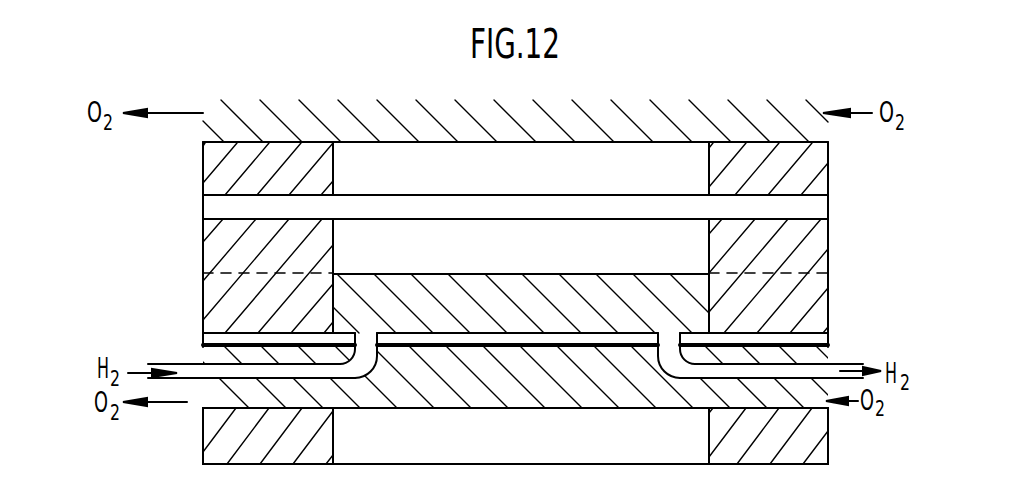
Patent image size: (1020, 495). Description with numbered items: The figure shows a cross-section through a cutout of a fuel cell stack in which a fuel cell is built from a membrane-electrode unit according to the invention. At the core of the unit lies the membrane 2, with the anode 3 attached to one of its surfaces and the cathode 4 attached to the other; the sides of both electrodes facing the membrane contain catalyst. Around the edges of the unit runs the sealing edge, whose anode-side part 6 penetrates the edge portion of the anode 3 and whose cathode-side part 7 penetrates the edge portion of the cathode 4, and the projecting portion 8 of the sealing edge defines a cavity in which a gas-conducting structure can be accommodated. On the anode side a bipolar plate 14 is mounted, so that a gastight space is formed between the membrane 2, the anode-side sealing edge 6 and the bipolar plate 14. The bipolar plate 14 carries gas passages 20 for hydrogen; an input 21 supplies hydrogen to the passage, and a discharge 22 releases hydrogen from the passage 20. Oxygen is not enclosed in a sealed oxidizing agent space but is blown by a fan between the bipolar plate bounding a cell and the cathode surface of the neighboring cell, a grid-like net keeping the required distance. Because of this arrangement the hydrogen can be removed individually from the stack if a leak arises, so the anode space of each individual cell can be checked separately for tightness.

The membrane 2 is at (515, 208).
The anode 3 is at (513, 261).
The cathode 4 is at (513, 176).
The anode-side part of the sealing edge 6 is at (265, 257).
The cathode-side part of the sealing edge 7 is at (267, 178).
The projecting portion of the sealing edge 8 is at (264, 321).
The bipolar plate 14 is at (817, 338).
The gas passages 20 is at (663, 350).
The input 21 is at (343, 368).
The discharge 22 is at (697, 372).